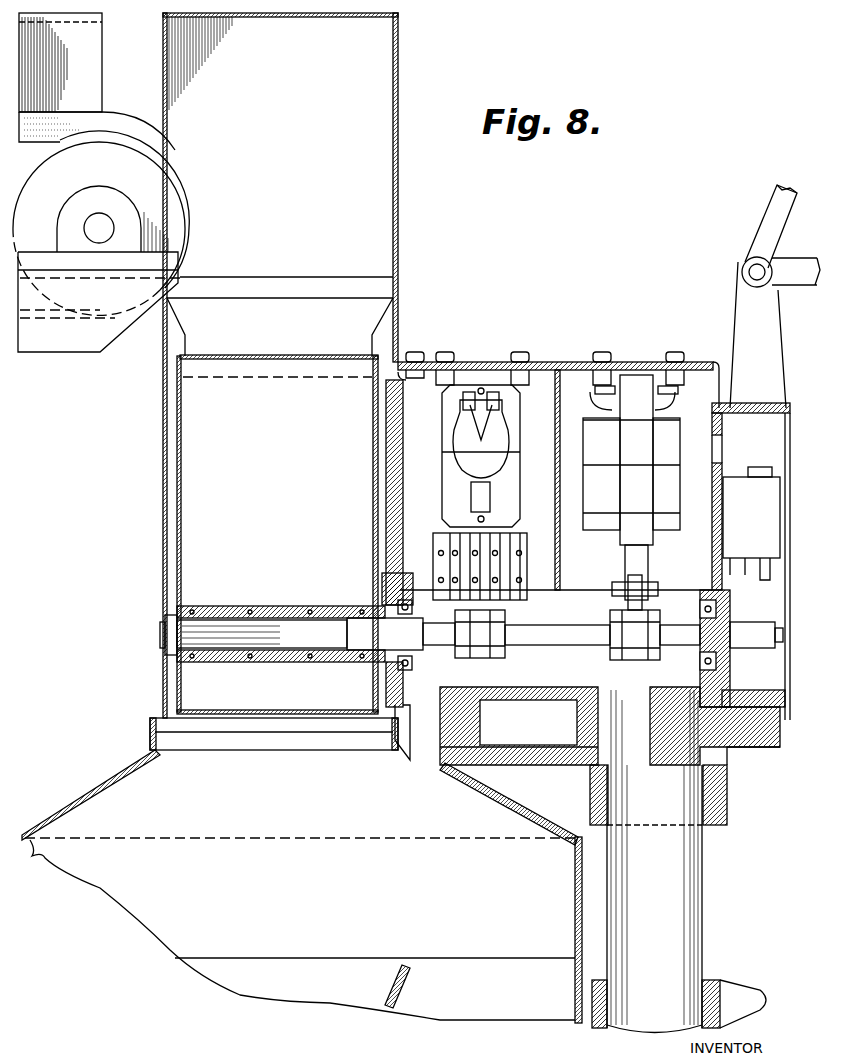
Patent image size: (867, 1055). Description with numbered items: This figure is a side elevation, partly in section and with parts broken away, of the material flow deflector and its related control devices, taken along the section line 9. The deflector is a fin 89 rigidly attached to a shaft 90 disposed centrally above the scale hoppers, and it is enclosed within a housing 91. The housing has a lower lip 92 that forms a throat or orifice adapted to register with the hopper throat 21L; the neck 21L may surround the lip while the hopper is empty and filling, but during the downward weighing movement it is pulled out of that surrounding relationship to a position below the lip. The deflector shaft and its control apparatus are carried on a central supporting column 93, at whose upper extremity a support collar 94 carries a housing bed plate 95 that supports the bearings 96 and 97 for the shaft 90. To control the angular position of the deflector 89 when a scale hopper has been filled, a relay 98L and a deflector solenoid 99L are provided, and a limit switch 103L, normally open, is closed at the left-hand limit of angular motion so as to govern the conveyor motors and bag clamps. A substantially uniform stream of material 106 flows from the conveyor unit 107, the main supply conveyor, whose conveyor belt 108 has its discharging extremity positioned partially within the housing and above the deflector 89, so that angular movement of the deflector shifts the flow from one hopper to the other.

The section line 9- 9 is at (660, 850).
The hopper throat 21L is at (150, 733).
The fin 89 is at (215, 488).
The shaft 90 is at (172, 636).
The housing 91 is at (163, 533).
The lower lip 92 is at (396, 705).
The central supporting column 93 is at (706, 920).
The support collar 94 is at (727, 805).
The housing bed plate 95 is at (468, 700).
The bearing 96 is at (413, 664).
The bearing 97 is at (700, 668).
The relay 98L is at (480, 430).
The deflector solenoid 99L is at (606, 500).
The limit switch 103L is at (772, 525).
The stream of material 106 is at (198, 178).
The conveyor unit 107 is at (82, 96).
The conveyor belt 108 is at (50, 141).